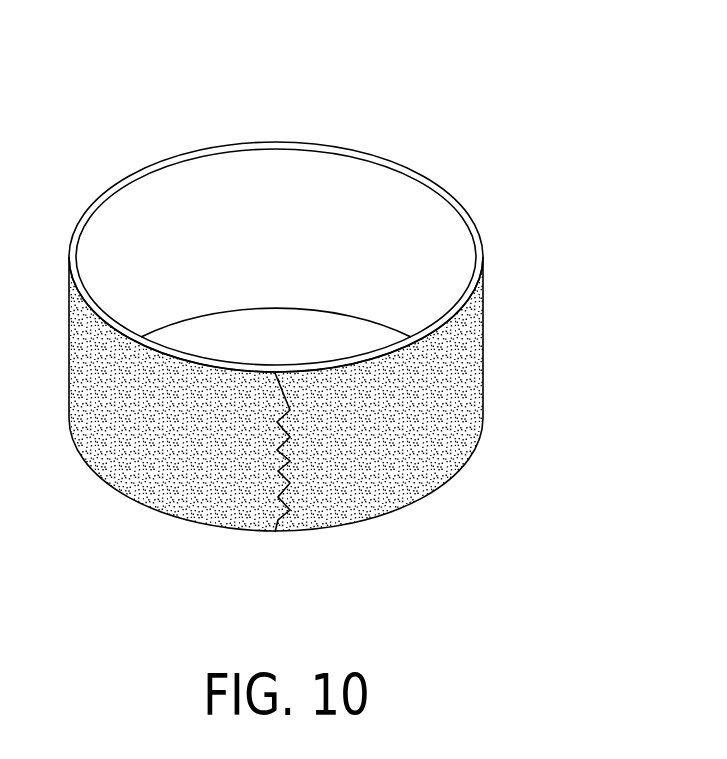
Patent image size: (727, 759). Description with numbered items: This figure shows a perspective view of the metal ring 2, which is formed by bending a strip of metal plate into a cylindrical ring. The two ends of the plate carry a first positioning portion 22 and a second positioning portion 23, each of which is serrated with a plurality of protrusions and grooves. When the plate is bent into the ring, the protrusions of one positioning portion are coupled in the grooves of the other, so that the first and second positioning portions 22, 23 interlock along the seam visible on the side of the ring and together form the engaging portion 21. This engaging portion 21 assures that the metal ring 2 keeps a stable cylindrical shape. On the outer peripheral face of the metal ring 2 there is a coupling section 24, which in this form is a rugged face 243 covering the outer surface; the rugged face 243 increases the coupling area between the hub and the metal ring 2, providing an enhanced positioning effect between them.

The metal ring 2 is at (290, 325).
The engaging portion 21 is at (301, 478).
The first positioning portion 22 is at (287, 483).
The second positioning portion 23 is at (280, 493).
The coupling section 24 is at (432, 459).
The rugged face 243 is at (402, 477).